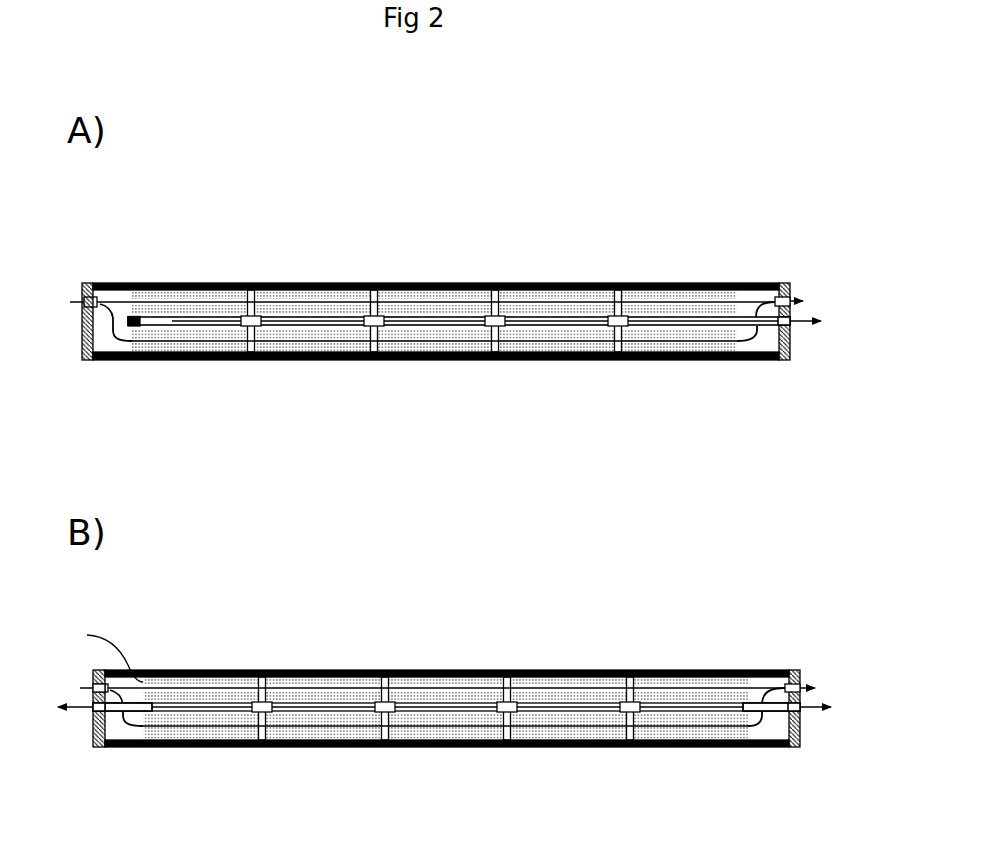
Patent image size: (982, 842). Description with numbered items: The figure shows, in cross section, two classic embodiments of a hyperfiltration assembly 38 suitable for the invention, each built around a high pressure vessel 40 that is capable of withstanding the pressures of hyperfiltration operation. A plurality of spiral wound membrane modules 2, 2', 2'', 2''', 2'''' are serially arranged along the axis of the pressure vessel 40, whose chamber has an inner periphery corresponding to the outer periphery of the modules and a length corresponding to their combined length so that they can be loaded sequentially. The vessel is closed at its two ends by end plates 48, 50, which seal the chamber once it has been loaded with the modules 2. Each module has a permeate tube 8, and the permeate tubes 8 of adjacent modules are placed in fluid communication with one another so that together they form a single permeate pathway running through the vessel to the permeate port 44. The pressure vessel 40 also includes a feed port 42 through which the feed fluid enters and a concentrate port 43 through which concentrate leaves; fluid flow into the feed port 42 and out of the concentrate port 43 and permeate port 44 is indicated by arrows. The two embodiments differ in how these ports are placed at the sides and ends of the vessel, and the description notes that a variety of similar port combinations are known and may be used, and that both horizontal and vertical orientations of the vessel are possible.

In FIG. 2A, the spiral wound membrane module 2 is at (155, 294).
In FIG. 2A, the spiral wound membrane module 2' is at (279, 294).
In FIG. 2B, the spiral wound membrane module 2' is at (290, 682).
In FIG. 2A, the spiral wound membrane module 2'' is at (401, 294).
In FIG. 2B, the spiral wound membrane module 2'' is at (413, 682).
In FIG. 2A, the spiral wound membrane module 2''' is at (524, 294).
In FIG. 2B, the spiral wound membrane module 2''' is at (535, 682).
In FIG. 2A, the spiral wound membrane module 2'''' is at (641, 294).
In FIG. 2B, the spiral wound membrane module 2'''' is at (652, 682).
In FIG. 2A, the permeate tube 8 is at (677, 313).
In FIG. 2B, the permeate tube 8 is at (690, 700).
In FIG. 2A, the hyperfiltration assembly 38 is at (392, 244).
In FIG. 2B, the hyperfiltration assembly 38 is at (412, 618).
In FIG. 2A, the high pressure vessel 40 is at (499, 290).
In FIG. 2B, the high pressure vessel 40 is at (512, 677).
In FIG. 2A, the feed port 42 is at (84, 300).
In FIG. 2B, the feed port 42 is at (95, 688).
In FIG. 2A, the concentrate port 43 is at (793, 300).
In FIG. 2B, the concentrate port 43 is at (805, 688).
In FIG. 2A, the permeate port 44 is at (791, 330).
In FIG. 2B, the permeate port 44 is at (80, 710).
In FIG. 2A, the end plate 48 is at (87, 361).
In FIG. 2B, the end plate 48 is at (98, 748).
In FIG. 2A, the end plate 50 is at (782, 361).
In FIG. 2B, the end plate 50 is at (795, 748).